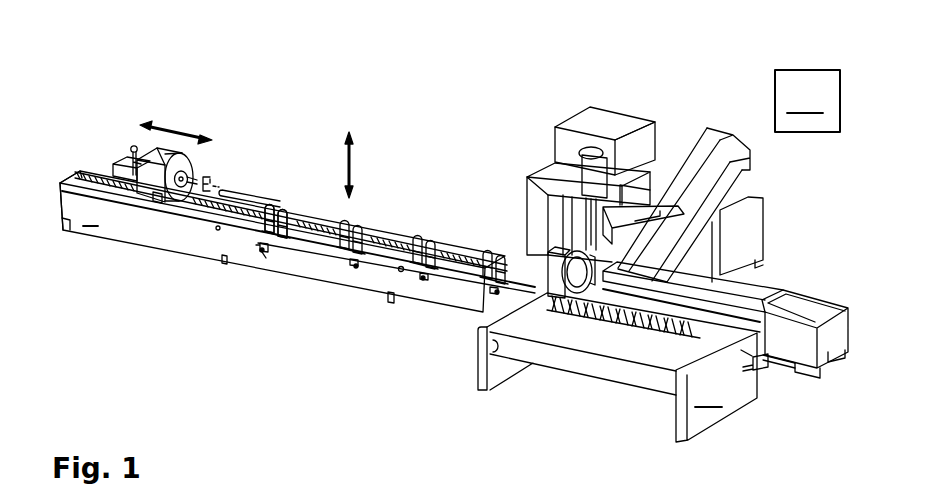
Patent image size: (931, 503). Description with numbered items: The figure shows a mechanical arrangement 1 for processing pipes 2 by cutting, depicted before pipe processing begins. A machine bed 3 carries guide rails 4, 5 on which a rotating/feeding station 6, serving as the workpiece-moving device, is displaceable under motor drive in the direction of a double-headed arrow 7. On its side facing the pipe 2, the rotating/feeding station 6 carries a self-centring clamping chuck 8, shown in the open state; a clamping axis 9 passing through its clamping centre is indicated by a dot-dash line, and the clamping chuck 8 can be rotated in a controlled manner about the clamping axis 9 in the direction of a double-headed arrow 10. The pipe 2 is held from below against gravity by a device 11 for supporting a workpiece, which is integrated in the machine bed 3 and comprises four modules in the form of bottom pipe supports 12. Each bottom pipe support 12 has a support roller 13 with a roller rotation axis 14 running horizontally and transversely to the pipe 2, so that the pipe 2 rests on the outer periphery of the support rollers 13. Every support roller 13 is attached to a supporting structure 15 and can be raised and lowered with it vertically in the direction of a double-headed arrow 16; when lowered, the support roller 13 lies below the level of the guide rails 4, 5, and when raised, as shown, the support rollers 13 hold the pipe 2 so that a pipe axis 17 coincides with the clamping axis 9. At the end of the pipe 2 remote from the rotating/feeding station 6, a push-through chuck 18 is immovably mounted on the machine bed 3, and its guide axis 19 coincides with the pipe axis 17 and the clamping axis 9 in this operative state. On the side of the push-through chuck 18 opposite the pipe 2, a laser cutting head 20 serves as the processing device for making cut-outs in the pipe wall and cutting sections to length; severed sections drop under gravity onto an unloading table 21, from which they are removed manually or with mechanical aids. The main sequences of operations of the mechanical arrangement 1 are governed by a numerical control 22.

The mechanical arrangement 1 is at (632, 101).
The pipe 2 is at (393, 220).
The machine bed 3 is at (282, 241).
The guide rail 4 is at (66, 180).
The guide rail 5 is at (90, 173).
The rotating/feeding station 6 is at (128, 203).
The double-headed arrow 7 is at (173, 127).
The clamping chuck 8 is at (180, 198).
The clamping axis 9 is at (217, 185).
The double-headed arrow 10 is at (206, 177).
The device for supporting a workpiece 11 is at (282, 203).
The bottom pipe support 12 is at (258, 252).
The support roller 13 is at (282, 230).
The roller rotation axis 14 is at (238, 235).
The supporting structure 15 is at (290, 234).
The double-headed arrow 16 is at (351, 160).
The pipe axis 17 is at (517, 262).
The push-through chuck 18 is at (555, 307).
The guide axis 19 is at (540, 260).
The laser cutting head 20 is at (600, 310).
The unloading table 21 is at (716, 387).
The numerical control 22 is at (807, 101).